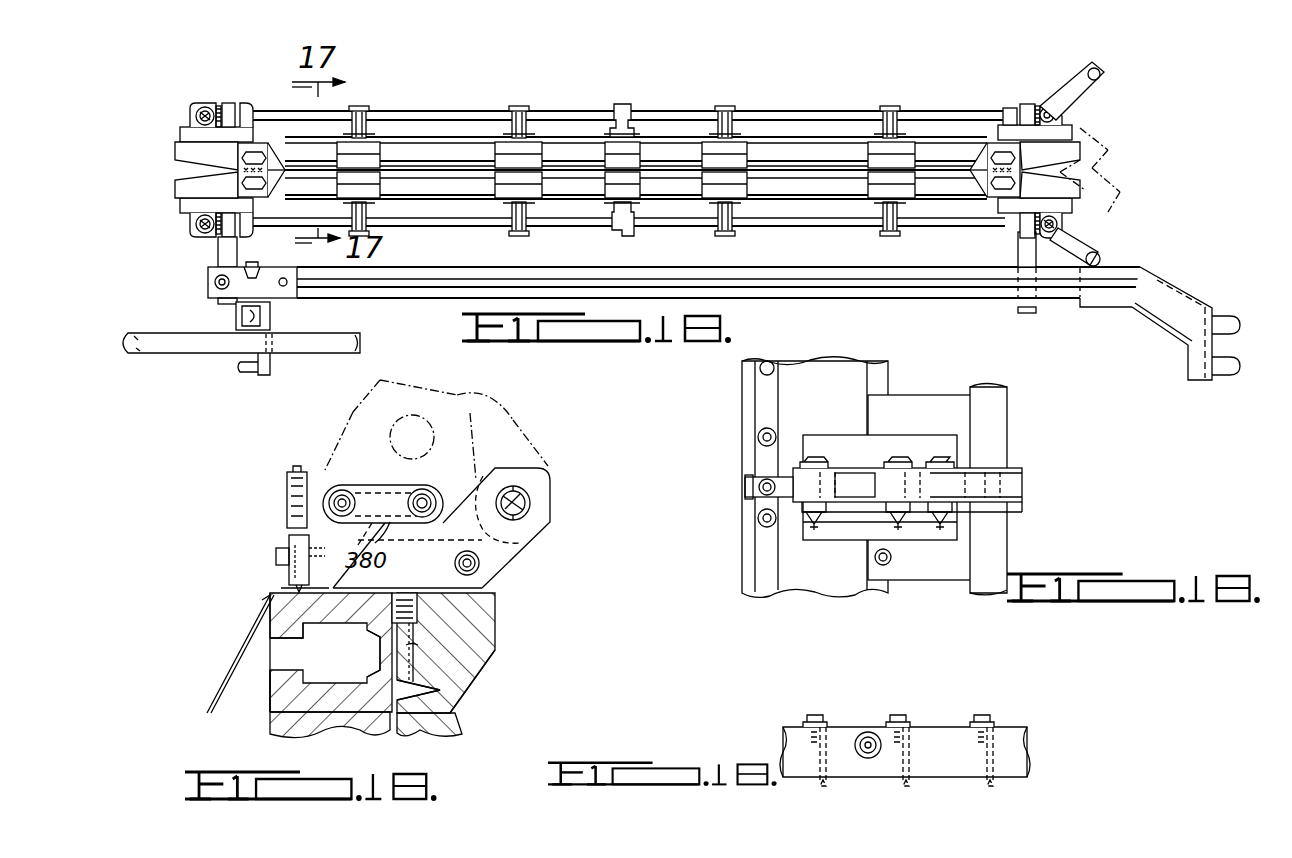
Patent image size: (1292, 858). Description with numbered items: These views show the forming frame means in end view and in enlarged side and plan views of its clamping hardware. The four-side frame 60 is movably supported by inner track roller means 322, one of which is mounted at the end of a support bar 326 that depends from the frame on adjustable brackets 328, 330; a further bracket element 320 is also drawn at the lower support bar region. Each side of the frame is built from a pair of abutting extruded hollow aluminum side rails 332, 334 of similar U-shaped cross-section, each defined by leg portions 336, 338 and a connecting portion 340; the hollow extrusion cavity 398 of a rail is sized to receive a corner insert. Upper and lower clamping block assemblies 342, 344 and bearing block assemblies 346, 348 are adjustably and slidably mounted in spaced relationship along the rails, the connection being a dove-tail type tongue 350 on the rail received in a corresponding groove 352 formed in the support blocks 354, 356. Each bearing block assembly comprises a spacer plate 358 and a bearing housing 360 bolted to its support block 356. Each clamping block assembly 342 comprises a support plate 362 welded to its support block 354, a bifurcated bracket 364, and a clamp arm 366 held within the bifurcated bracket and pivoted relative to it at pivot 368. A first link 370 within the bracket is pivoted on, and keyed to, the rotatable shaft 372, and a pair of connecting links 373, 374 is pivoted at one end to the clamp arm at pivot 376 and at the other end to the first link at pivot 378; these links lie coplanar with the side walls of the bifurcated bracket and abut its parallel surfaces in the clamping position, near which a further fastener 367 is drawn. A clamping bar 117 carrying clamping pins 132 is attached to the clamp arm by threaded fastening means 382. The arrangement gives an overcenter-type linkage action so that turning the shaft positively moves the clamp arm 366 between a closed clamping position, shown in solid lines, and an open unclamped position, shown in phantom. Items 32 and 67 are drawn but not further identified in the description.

In FIG. 16, the rod 32 is at (162, 356).
In FIG. 16, the four-side frame 60 is at (176, 160).
In FIG. 17, the four-side frame 60 is at (268, 722).
In FIG. 18, the four-side frame 60 is at (795, 605).
In FIG. 17, the rod 67 is at (255, 620).
In FIG. 17, the clamping bar 117 is at (290, 541).
In FIG. 19, the clamping bar 117 is at (1030, 750).
In FIG. 17, the clamping pins 132 is at (295, 588).
In FIG. 19, the clamping pins 132 is at (906, 788).
In FIG. 16, the bracket 320 is at (270, 330).
In FIG. 16, the inner track roller means 322 is at (1218, 310).
In FIG. 16, the support bar 326 is at (835, 290).
In FIG. 16, the adjustable bracket 328 is at (218, 252).
In FIG. 16, the adjustable bracket 330 is at (1027, 250).
In FIG. 16, the side rail 332 is at (990, 138).
In FIG. 17, the side rail 332 is at (275, 700).
In FIG. 18, the side rail 332 is at (845, 590).
In FIG. 16, the side rail 334 is at (997, 204).
In FIG. 17, the leg portion 336 is at (315, 640).
In FIG. 17, the leg portion 338 is at (338, 728).
In FIG. 17, the connecting portion 340 is at (349, 656).
In FIG. 16, the upper clamping block assembly 342 is at (372, 136).
In FIG. 17, the upper clamping block assembly 342 is at (500, 596).
In FIG. 16, the lower clamping block assembly 344 is at (372, 207).
In FIG. 16, the bearing block assembly 346 is at (180, 130).
In FIG. 16, the bearing block assembly 348 is at (180, 200).
In FIG. 17, the dove-tail type tongue 350 is at (455, 692).
In FIG. 17, the groove 352 is at (440, 650).
In FIG. 17, the support block 354 is at (470, 670).
In FIG. 18, the support block 354 is at (935, 568).
In FIG. 16, the support block 356 is at (1080, 175).
In FIG. 16, the spacer plate 358 is at (1078, 220).
In FIG. 16, the bearing housing 360 is at (1085, 244).
In FIG. 17, the support plate 362 is at (478, 612).
In FIG. 18, the support plate 362 is at (805, 535).
In FIG. 17, the bifurcated bracket 364 is at (520, 557).
In FIG. 18, the bifurcated bracket 364 is at (1015, 505).
In FIG. 17, the clamp arm 366 is at (288, 506).
In FIG. 18, the clamp arm 366 is at (760, 484).
In FIG. 17, the bolt 367 is at (456, 563).
In FIG. 18, the pivot 368 is at (945, 464).
In FIG. 17, the first link 370 is at (532, 495).
In FIG. 18, the first link 370 is at (940, 460).
In FIG. 16, the rotatable shaft 372 is at (568, 110).
In FIG. 17, the rotatable shaft 372 is at (540, 495).
In FIG. 18, the rotatable shaft 372 is at (1000, 437).
In FIG. 18, the connecting link 373 is at (850, 465).
In FIG. 17, the connecting link 374 is at (374, 500).
In FIG. 18, the connecting link 374 is at (852, 505).
In FIG. 17, the pivot 376 is at (335, 498).
In FIG. 18, the pivot 376 is at (814, 460).
In FIG. 17, the pivot 378 is at (420, 490).
In FIG. 18, the pivot 378 is at (897, 460).
In FIG. 19, the threaded fastening means 382 is at (868, 735).
In FIG. 17, the extrusion cavity 398 is at (285, 657).